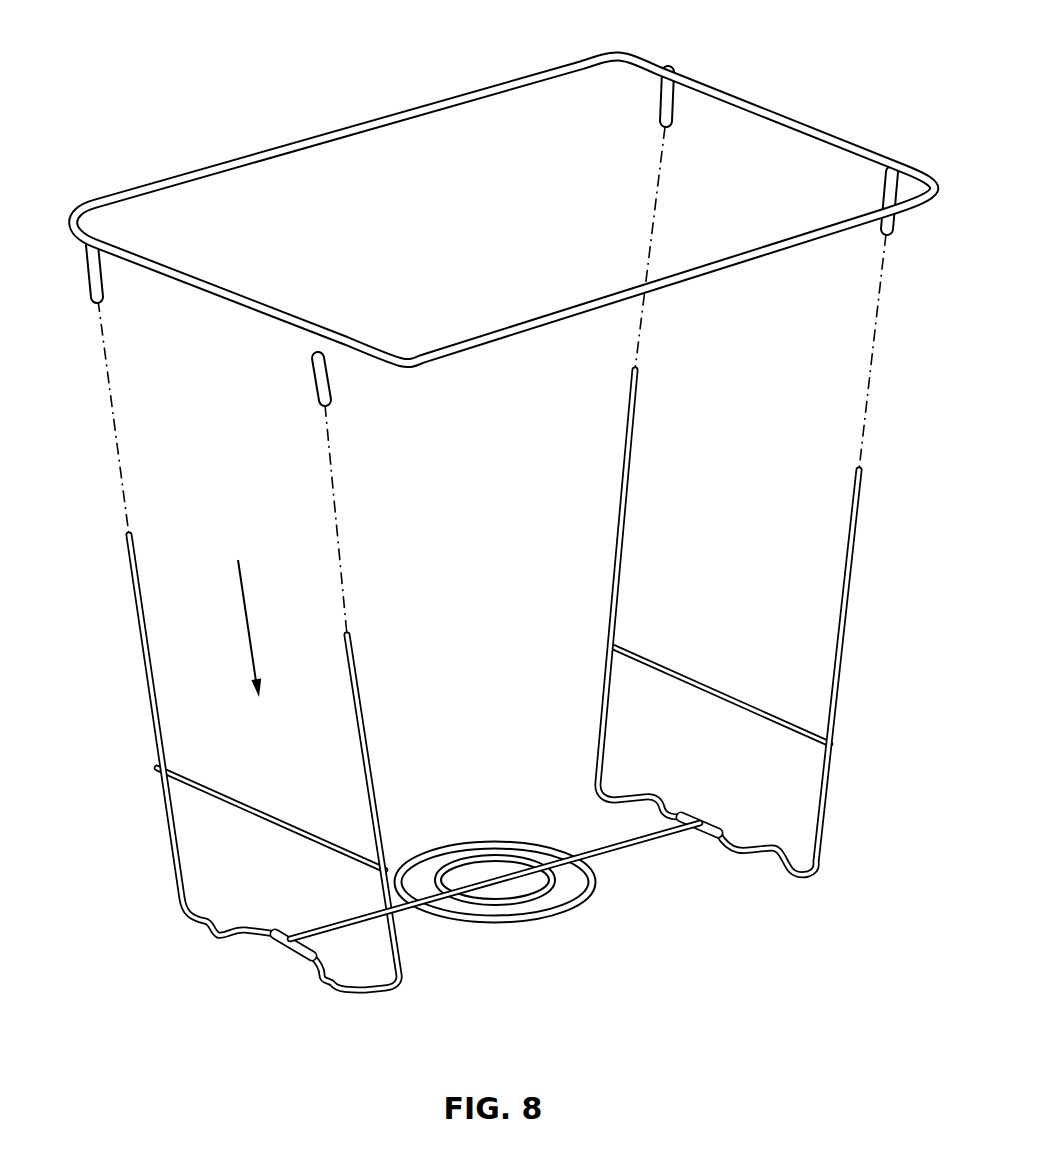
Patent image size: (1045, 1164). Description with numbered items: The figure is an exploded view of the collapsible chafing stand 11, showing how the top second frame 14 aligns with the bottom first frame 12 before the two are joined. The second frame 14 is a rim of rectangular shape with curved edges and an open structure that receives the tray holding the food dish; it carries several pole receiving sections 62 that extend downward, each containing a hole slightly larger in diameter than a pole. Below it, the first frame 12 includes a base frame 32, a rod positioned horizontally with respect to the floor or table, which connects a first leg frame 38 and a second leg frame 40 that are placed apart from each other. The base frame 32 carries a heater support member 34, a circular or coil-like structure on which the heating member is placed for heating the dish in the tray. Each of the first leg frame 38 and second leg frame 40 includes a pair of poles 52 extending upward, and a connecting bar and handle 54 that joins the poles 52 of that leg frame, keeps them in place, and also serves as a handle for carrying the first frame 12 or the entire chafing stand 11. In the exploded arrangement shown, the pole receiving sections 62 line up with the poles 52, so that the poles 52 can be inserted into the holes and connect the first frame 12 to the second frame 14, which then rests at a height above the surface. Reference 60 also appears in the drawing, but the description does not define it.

The collapsible chafing stand 11 is at (132, 80).
The first frame 12 is at (868, 795).
The second frame 14 is at (479, 216).
The base frame 32 is at (350, 922).
The heater support member 34 is at (587, 898).
The first leg frame 38 is at (318, 980).
The second leg frame 40 is at (820, 875).
The pole 52 is at (496, 694).
The connecting bar and handle 54 is at (262, 813).
The peg 60 is at (815, 125).
The pole receiving section 62 is at (87, 290).